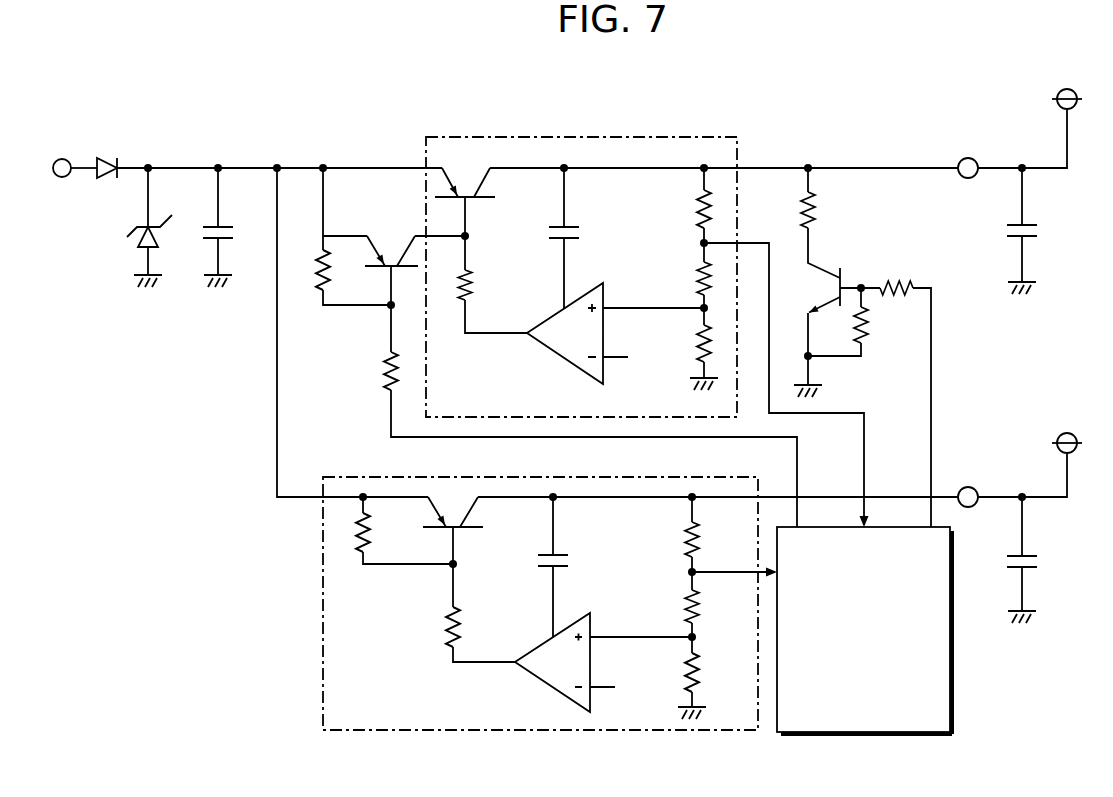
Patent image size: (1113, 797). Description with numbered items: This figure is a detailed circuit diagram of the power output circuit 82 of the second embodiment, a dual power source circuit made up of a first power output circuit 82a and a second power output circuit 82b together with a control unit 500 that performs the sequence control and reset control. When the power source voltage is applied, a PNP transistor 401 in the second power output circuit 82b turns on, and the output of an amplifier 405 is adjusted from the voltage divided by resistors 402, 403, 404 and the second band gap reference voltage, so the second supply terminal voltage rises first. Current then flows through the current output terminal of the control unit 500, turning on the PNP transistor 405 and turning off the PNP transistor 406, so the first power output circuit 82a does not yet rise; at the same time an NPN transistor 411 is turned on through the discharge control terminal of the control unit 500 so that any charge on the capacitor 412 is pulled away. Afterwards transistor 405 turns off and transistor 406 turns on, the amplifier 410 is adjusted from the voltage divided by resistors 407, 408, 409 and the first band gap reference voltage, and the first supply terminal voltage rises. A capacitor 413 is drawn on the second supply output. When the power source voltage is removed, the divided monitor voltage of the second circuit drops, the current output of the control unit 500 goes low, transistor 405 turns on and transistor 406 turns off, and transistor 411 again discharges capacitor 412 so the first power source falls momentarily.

The power output circuit 82 is at (364, 115).
The first power output circuit 82a is at (614, 137).
The second power output circuit 82b is at (340, 477).
The PNP transistor 401 is at (469, 530).
The resistor 402 is at (685, 543).
The resistor 403 is at (685, 610).
The resistor 404 is at (685, 662).
The amplifier / PNP transistor 405 is at (380, 258).
The PNP transistor 406 is at (478, 200).
The resistor 407 is at (697, 213).
The resistor 408 is at (697, 280).
The resistor 409 is at (697, 333).
The amplifier 410 is at (588, 293).
The NPN transistor 411 is at (841, 276).
The capacitor 412 is at (1028, 222).
The capacitor 413 is at (1028, 552).
The control unit 500 is at (954, 700).